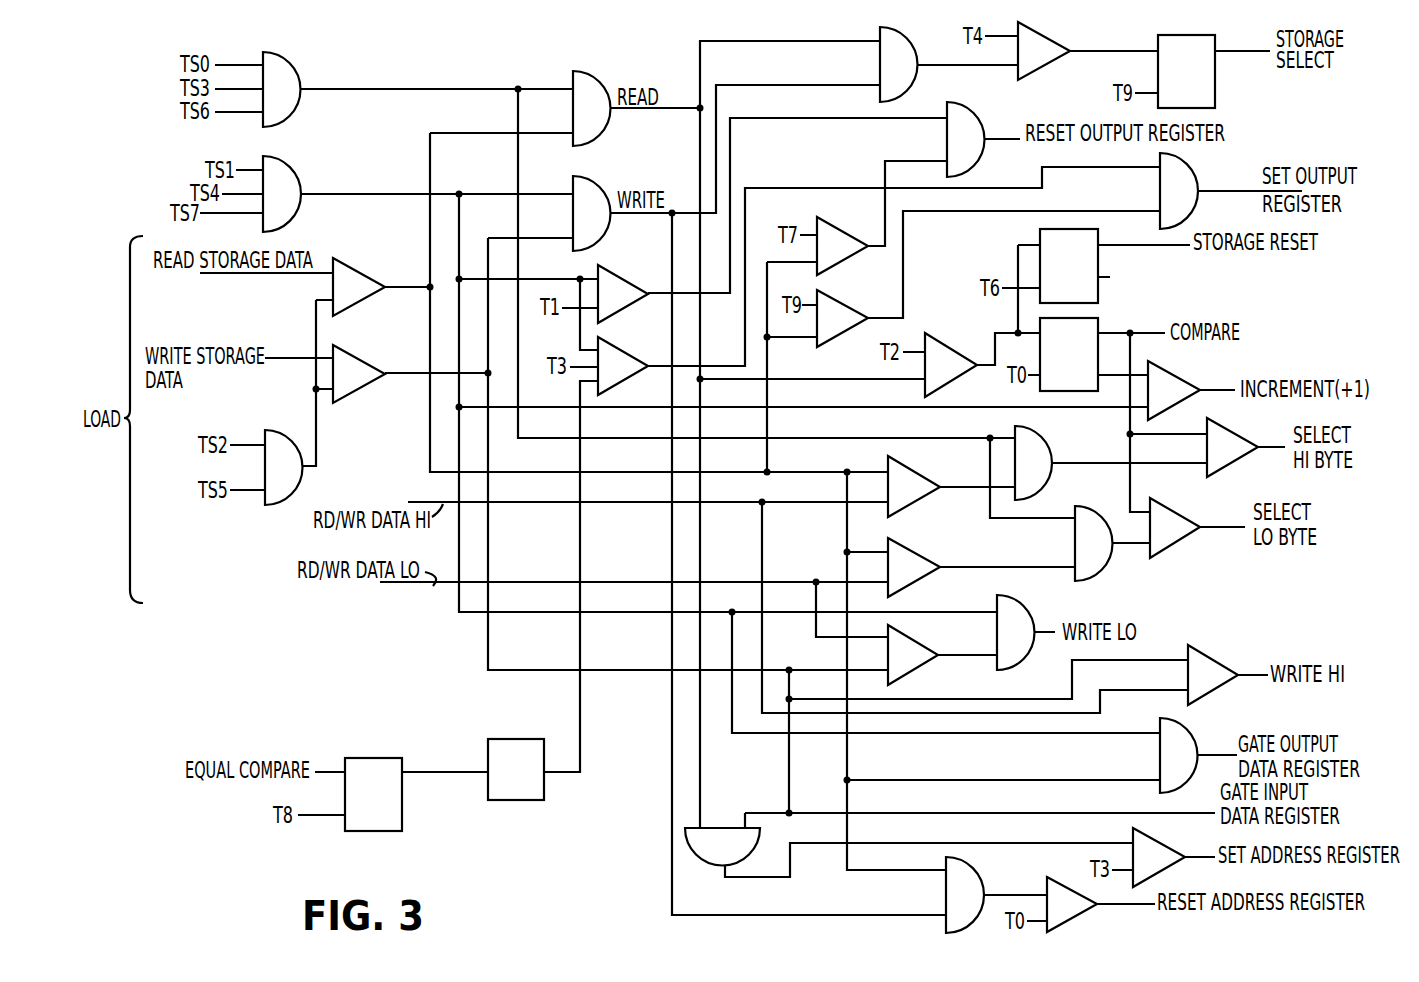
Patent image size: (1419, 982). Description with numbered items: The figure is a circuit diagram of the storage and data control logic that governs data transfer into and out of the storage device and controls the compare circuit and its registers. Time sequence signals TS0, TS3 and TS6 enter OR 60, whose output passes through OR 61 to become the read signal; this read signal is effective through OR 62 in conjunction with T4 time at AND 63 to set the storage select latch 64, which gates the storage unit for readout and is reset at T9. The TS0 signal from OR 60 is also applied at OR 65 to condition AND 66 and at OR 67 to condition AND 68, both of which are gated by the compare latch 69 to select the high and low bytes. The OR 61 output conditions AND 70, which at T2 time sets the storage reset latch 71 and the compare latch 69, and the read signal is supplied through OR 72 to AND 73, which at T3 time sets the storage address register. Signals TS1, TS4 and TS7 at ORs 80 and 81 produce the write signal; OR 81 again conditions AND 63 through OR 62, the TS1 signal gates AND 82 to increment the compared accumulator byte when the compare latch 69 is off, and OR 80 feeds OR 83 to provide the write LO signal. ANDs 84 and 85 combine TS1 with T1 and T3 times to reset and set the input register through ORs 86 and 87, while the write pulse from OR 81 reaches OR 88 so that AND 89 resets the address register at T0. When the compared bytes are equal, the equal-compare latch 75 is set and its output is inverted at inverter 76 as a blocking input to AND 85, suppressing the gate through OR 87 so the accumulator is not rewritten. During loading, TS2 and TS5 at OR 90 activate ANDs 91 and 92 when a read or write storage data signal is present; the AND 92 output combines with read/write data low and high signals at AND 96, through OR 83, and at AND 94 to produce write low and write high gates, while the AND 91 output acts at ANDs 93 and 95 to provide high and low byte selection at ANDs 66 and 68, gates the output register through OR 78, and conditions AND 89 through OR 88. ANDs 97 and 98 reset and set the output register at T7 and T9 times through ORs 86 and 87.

The OR 60 is at (287, 61).
The OR 80 is at (291, 172).
The OR 61 is at (586, 77).
The OR 81 is at (589, 187).
The OR 62 is at (907, 37).
The AND 63 is at (1053, 38).
The storage select latch 64 is at (1208, 35).
The OR 86 is at (974, 116).
The OR 87 is at (1196, 172).
The AND 97 is at (835, 232).
The AND 98 is at (835, 302).
The storage reset latch 71 is at (1098, 277).
The compare latch 69 is at (1099, 327).
The AND 70 is at (941, 343).
The AND 82 is at (1170, 375).
The OR 65 is at (1044, 444).
The AND 66 is at (1228, 437).
The OR 67 is at (1086, 506).
The AND 68 is at (1158, 505).
The AND 91 is at (350, 265).
The AND 92 is at (353, 360).
The OR 90 is at (276, 433).
The AND 84 is at (611, 273).
The AND 85 is at (616, 347).
The AND 93 is at (910, 472).
The AND 95 is at (910, 553).
The AND 96 is at (910, 640).
The OR 83 is at (1014, 601).
The AND 94 is at (1205, 657).
The OR 78 is at (1182, 737).
The AND 73 is at (1156, 842).
The OR 88 is at (971, 872).
The AND 89 is at (1077, 919).
The OR 72 is at (707, 863).
The equal-compare latch 75 is at (368, 754).
The inverter 76 is at (514, 736).